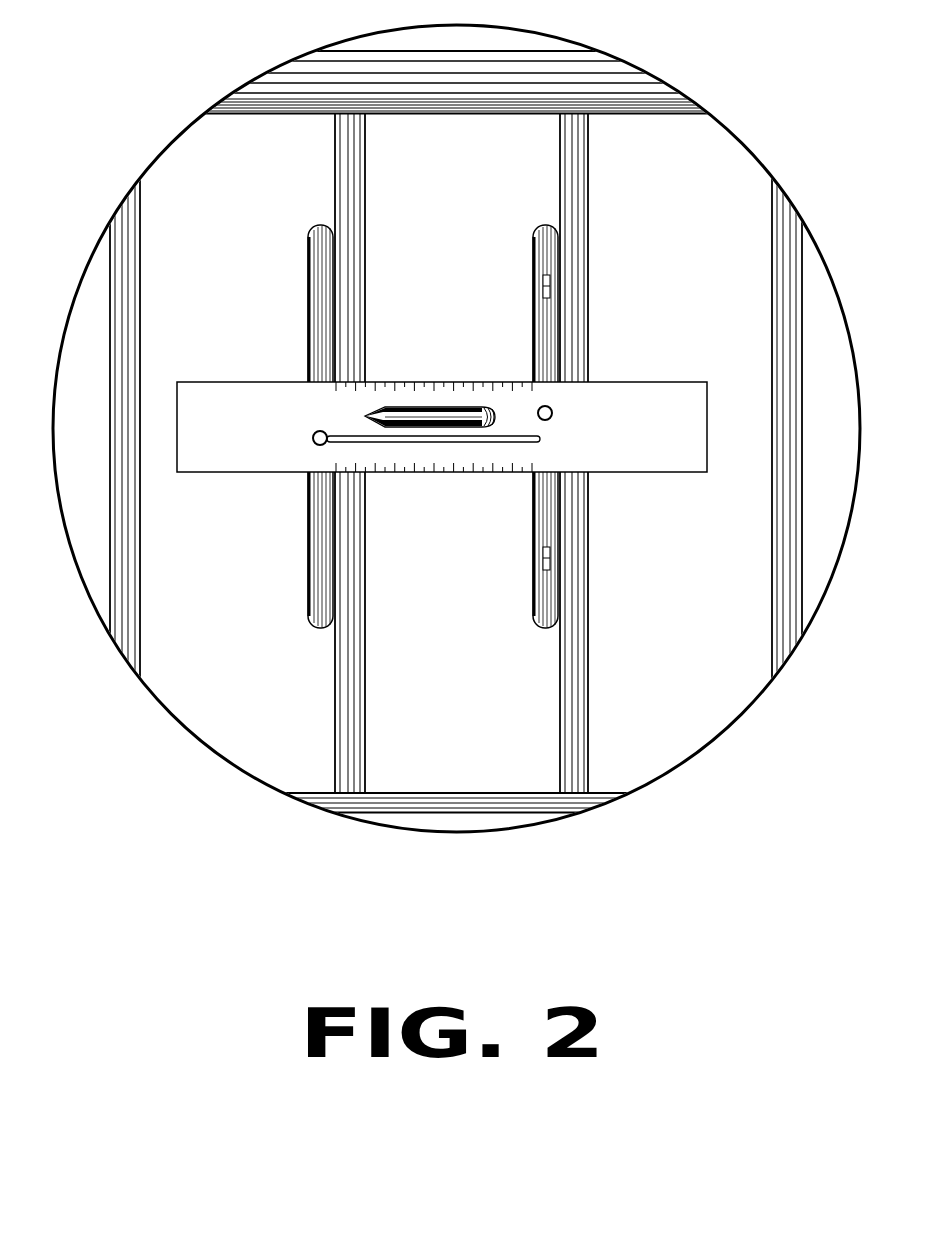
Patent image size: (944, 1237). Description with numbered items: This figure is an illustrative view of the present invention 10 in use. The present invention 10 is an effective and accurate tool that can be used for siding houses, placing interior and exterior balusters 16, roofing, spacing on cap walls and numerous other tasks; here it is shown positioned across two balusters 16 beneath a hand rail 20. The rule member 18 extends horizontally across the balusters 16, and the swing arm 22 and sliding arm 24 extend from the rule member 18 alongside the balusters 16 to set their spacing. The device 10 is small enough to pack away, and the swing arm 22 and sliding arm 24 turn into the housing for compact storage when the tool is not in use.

The present invention 10 is at (485, 353).
The balusters 16 is at (365, 583).
The rule member base 18 is at (621, 422).
The hand rail 20 is at (468, 95).
The swing arm 22 is at (530, 513).
The sliding arm 24 is at (307, 532).